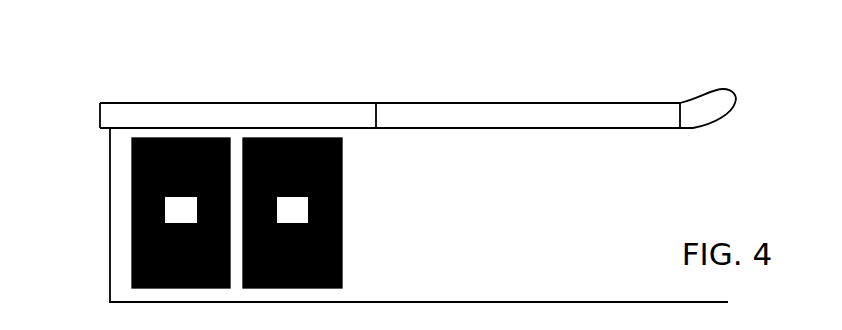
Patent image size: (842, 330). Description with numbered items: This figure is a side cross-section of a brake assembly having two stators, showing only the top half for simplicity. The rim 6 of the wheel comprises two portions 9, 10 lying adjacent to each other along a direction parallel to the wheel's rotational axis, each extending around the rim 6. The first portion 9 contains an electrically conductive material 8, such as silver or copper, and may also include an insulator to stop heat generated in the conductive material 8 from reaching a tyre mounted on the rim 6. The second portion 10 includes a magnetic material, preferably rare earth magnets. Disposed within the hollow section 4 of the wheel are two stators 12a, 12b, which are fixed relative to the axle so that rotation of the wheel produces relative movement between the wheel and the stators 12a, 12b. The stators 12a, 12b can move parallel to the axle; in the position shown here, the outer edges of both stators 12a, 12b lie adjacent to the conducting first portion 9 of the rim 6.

The hollow section 4 is at (683, 206).
The rim 6 is at (483, 103).
The electrically conductive material 8 is at (117, 122).
The first portion 9 is at (221, 103).
The second portion 10 is at (637, 128).
The stator 12a is at (172, 138).
The stator 12b is at (302, 138).